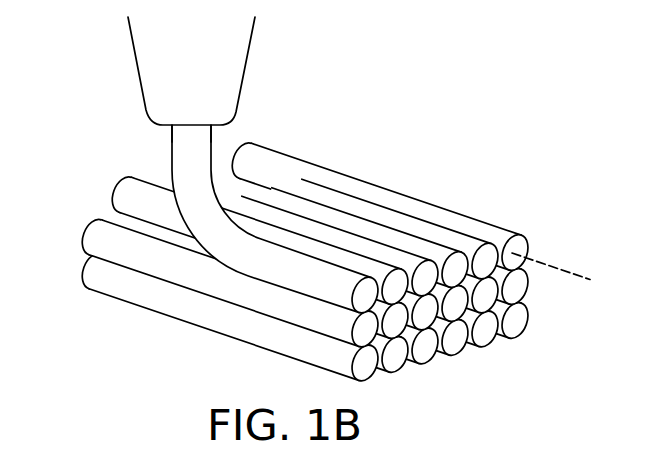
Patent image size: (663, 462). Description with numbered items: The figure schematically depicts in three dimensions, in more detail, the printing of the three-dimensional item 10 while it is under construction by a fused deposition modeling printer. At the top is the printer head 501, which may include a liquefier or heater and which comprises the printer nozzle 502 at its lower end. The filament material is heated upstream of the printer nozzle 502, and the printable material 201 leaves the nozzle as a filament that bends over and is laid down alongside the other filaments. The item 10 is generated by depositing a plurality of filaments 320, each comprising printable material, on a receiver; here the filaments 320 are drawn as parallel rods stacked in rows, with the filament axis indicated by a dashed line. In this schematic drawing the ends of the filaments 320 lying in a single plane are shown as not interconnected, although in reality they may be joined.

The 3D item 10 is at (334, 246).
The printable material 201 is at (200, 147).
The filament 320 is at (160, 300).
The printer head 501 is at (150, 43).
The printer nozzle 502 is at (163, 126).